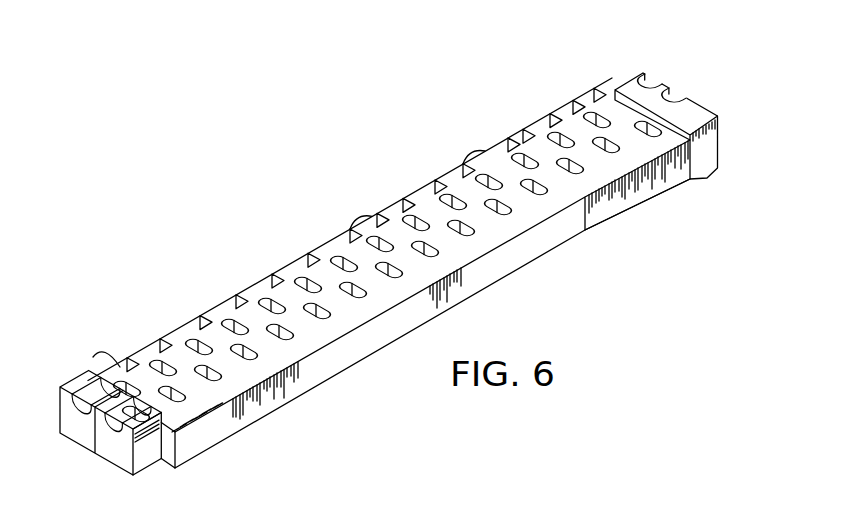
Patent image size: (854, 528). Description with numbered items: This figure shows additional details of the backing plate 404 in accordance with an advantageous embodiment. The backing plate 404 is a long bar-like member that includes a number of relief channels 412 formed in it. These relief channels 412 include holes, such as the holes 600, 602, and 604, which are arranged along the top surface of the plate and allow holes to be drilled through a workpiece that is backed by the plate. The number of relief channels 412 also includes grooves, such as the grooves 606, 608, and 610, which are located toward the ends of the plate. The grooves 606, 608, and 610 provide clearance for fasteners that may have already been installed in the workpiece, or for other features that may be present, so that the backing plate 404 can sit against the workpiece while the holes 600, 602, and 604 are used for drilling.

The number of relief channels 412 is at (287, 180).
The backing plate 404 is at (575, 113).
The hole 600 is at (130, 347).
The hole 602 is at (188, 346).
The hole 604 is at (360, 226).
The groove 606 is at (660, 84).
The groove 608 is at (92, 442).
The groove 610 is at (100, 377).